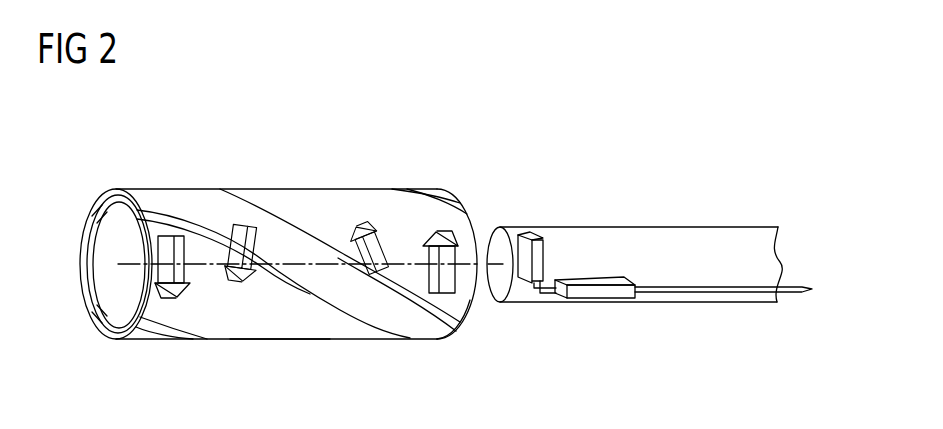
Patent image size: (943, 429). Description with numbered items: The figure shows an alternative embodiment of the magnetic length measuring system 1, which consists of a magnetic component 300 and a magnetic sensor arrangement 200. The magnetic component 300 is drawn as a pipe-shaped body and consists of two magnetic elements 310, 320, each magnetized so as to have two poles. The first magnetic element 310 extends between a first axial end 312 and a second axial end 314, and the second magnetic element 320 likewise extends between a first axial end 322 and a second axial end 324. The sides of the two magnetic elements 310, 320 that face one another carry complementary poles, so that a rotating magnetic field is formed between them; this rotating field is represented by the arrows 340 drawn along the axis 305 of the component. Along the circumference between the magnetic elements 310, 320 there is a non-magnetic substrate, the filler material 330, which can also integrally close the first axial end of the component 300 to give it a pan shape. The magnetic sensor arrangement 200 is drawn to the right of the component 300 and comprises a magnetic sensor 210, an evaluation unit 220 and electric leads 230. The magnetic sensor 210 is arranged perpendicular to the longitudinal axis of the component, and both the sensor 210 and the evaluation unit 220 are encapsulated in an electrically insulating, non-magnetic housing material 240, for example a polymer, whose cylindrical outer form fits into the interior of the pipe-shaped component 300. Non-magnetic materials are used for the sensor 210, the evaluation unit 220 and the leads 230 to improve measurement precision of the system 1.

The length measuring system 1 is at (348, 98).
The magnetic sensor arrangement 200 is at (650, 239).
The magnetic sensor 210 is at (530, 233).
The evaluation unit 220 is at (603, 293).
The electric leads 230 is at (540, 298).
The housing material 240 is at (673, 233).
The magnetic component 300 is at (240, 118).
The axis of rotation 305 is at (320, 263).
The magnetic element 310 is at (250, 211).
The first axial end 312 is at (108, 188).
The second axial end 314 is at (455, 341).
The magnetic element 320 is at (426, 191).
The first axial end 322 is at (108, 341).
The second axial end 324 is at (463, 195).
The filler material 330 is at (283, 330).
The arrows 340 is at (167, 250).